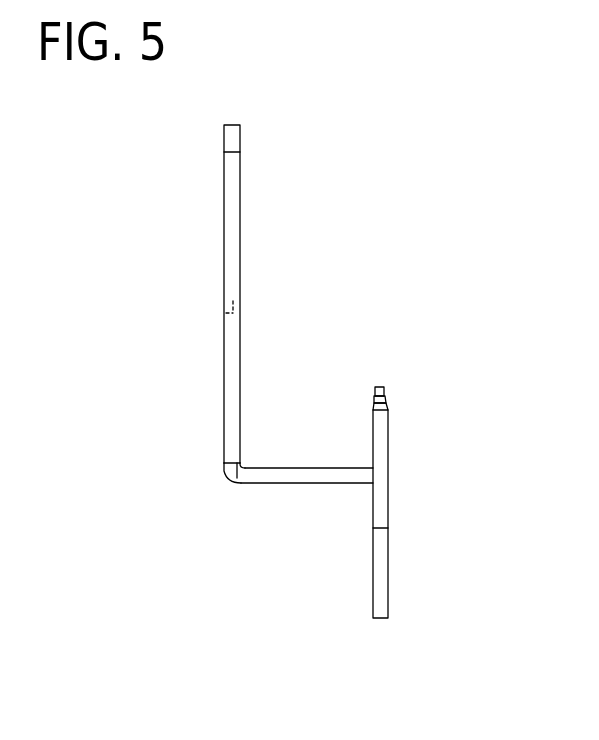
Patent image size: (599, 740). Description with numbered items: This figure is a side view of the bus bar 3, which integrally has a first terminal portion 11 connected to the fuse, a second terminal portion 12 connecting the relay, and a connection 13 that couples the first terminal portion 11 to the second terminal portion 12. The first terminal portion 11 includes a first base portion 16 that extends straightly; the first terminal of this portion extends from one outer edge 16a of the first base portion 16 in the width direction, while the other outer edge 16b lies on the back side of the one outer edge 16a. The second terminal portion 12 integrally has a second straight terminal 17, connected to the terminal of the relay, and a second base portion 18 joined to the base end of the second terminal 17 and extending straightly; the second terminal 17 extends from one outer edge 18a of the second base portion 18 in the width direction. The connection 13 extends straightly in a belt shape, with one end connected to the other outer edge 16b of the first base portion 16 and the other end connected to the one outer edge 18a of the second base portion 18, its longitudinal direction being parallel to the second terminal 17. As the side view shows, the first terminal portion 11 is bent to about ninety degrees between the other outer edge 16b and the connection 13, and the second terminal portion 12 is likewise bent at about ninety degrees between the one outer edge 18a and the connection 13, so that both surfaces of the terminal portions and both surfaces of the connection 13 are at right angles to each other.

The bus bar 3 is at (293, 116).
The first terminal portion 11 is at (241, 241).
The second terminal portion 12 is at (390, 438).
The connection 13 is at (305, 485).
The first base portion 16 is at (233, 398).
The one outer edge of the first base portion 16a is at (240, 297).
The other outer edge of the first base portion 16b is at (236, 485).
The second straight terminal 17 is at (378, 427).
The second base portion 18 is at (389, 567).
The one outer edge of the second base portion 18a is at (388, 469).